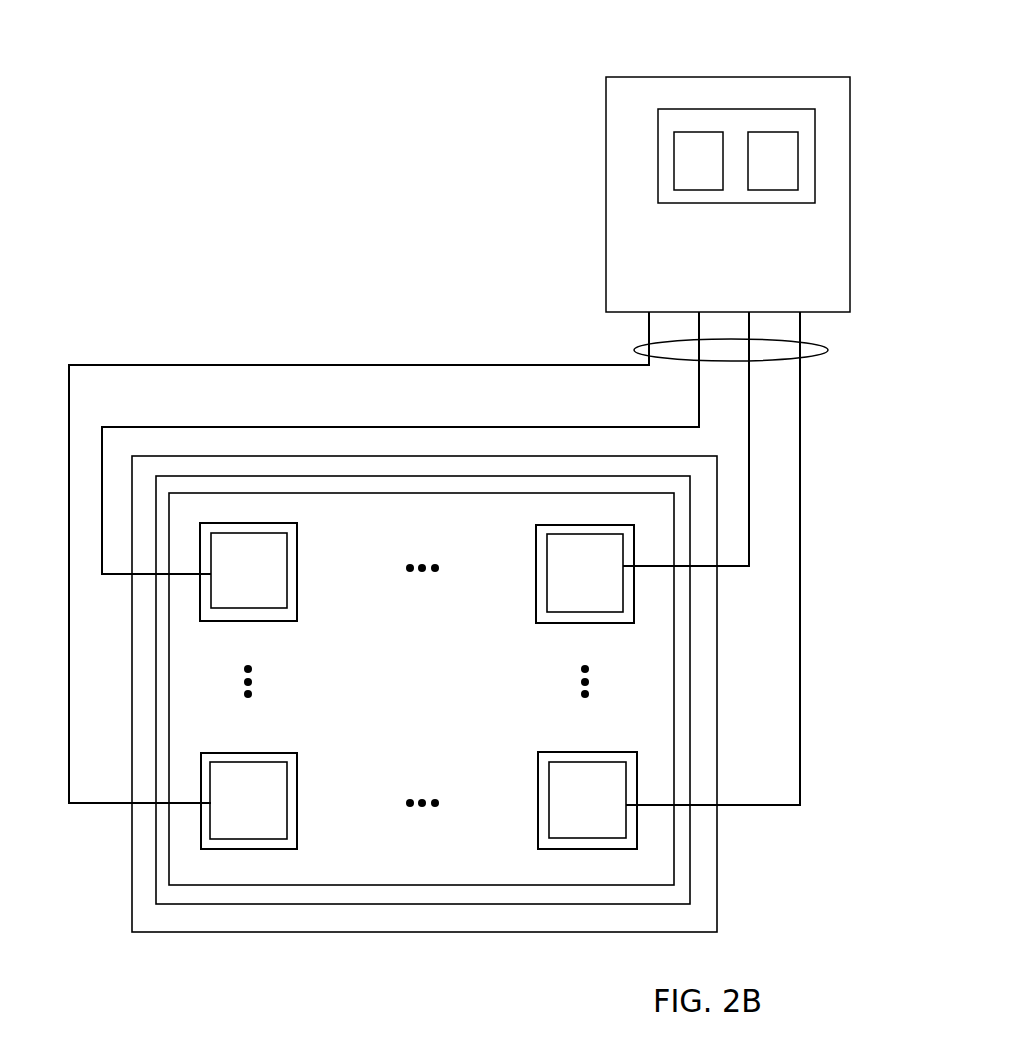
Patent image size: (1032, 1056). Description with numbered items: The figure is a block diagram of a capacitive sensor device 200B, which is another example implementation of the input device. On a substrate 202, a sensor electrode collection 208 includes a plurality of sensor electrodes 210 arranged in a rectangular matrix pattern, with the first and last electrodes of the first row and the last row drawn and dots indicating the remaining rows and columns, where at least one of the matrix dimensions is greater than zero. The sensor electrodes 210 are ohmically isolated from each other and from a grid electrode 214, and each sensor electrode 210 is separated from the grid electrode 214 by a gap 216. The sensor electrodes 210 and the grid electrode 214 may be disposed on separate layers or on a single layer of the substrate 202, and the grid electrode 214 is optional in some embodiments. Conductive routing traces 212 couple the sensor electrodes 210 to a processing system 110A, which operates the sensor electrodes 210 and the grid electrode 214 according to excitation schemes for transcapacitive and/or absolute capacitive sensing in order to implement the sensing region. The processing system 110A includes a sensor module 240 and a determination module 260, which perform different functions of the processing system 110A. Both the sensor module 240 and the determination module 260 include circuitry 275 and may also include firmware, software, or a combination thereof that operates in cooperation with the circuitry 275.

The capacitive sensor device 200B is at (344, 258).
The processing system 110A is at (708, 286).
The circuitry 275 is at (678, 109).
The sensor module 240 is at (683, 171).
The determination module 260 is at (758, 171).
The conductive routing traces 212 is at (828, 349).
The substrate 202 is at (170, 932).
The sensor electrode collection 208 is at (222, 904).
The grid electrode 214 is at (372, 867).
The sensor electrodes 210 is at (276, 584).
The gap 216 is at (298, 780).